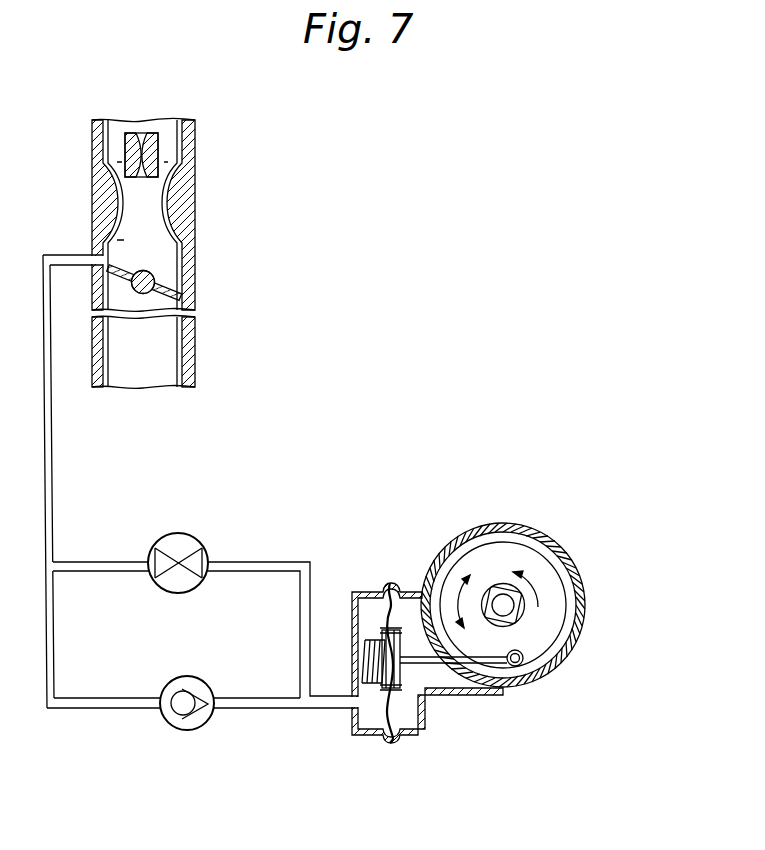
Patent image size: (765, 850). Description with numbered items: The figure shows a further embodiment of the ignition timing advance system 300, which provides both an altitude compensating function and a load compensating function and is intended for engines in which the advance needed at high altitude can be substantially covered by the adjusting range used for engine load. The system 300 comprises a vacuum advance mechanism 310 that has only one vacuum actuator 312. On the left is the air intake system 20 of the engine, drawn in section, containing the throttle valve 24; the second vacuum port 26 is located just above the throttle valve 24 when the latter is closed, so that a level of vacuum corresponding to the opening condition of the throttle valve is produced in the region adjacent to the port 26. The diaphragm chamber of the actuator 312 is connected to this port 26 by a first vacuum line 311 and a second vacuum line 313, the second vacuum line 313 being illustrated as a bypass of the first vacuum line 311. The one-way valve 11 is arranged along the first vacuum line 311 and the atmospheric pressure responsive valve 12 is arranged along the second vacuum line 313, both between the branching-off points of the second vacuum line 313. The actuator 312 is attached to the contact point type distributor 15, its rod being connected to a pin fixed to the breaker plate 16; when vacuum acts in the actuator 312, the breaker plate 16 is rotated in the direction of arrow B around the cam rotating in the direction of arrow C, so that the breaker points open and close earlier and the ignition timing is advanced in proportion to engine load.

The air intake system 20 is at (214, 216).
The throttle valve 24 is at (165, 279).
The second vacuum port 26 is at (107, 243).
The system 300 is at (430, 242).
The vacuum advance mechanism 310 is at (410, 774).
The first vacuum line 311 is at (55, 478).
The vacuum actuator 312 is at (356, 735).
The second vacuum line 313 is at (87, 561).
The atmospheric pressure responsive valve 12 is at (183, 532).
The one-way valve 11 is at (187, 731).
The distributor 15 is at (544, 520).
The breaker plate 16 is at (562, 616).